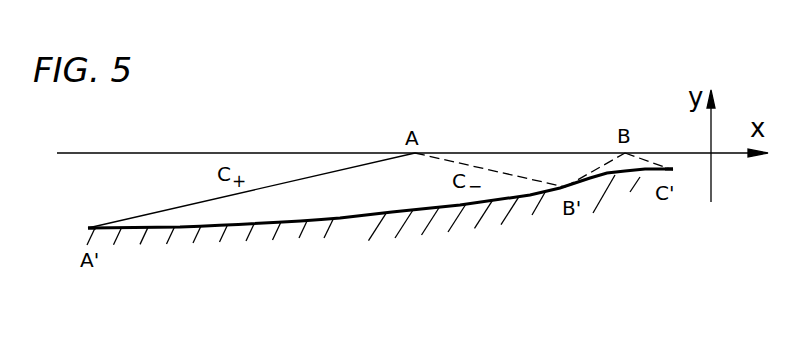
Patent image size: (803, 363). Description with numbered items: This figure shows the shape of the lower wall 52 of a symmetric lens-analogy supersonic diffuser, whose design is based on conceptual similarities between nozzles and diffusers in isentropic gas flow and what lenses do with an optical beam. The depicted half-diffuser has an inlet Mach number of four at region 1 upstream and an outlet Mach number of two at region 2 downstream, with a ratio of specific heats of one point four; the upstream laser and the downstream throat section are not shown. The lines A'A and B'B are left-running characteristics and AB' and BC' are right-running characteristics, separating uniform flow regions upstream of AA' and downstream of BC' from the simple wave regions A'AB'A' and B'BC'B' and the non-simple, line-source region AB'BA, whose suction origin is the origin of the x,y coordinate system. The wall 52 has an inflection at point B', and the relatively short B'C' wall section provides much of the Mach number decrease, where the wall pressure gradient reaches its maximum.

The wall 52 is at (353, 230).
The start point of path 1 is at (95, 204).
The end point of path 2 is at (680, 171).